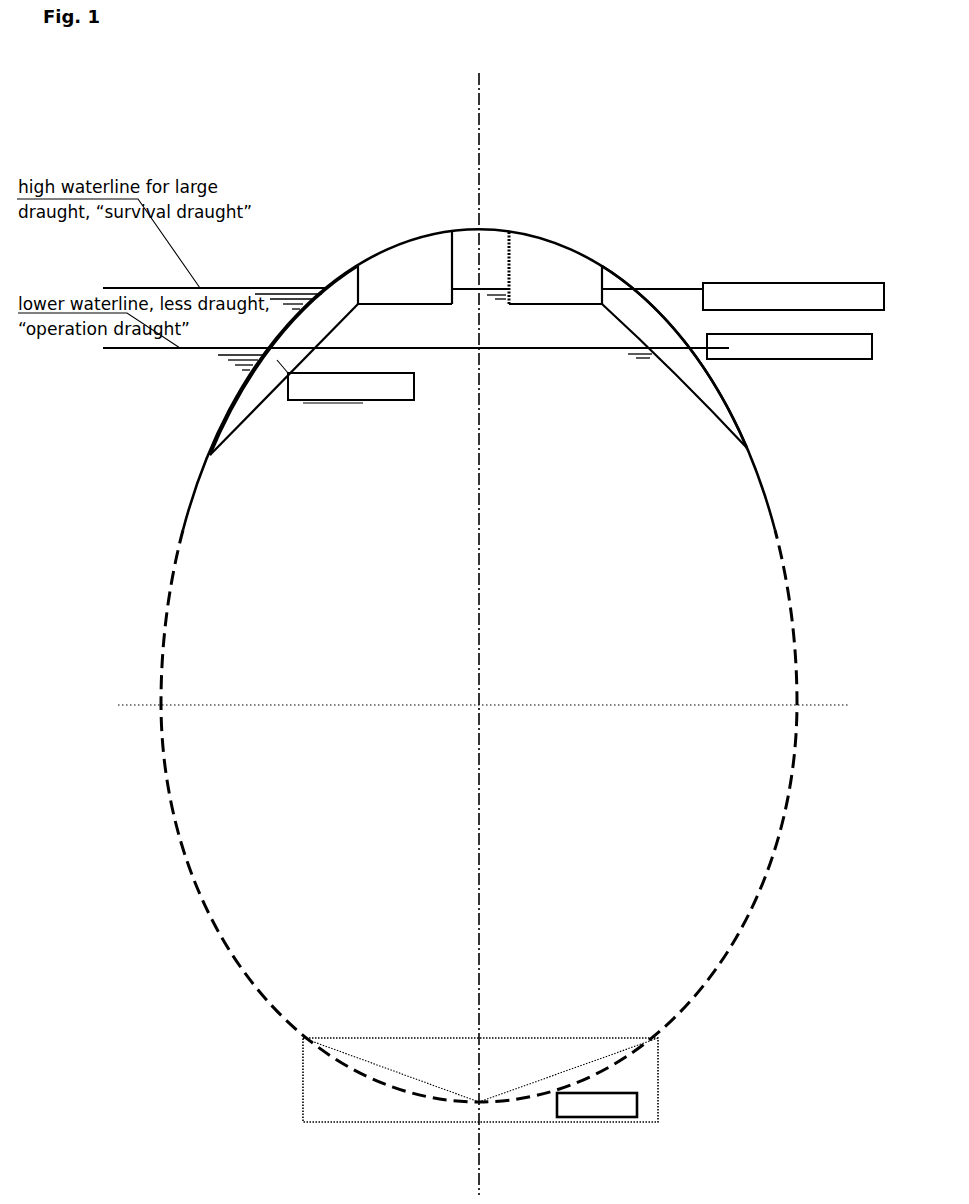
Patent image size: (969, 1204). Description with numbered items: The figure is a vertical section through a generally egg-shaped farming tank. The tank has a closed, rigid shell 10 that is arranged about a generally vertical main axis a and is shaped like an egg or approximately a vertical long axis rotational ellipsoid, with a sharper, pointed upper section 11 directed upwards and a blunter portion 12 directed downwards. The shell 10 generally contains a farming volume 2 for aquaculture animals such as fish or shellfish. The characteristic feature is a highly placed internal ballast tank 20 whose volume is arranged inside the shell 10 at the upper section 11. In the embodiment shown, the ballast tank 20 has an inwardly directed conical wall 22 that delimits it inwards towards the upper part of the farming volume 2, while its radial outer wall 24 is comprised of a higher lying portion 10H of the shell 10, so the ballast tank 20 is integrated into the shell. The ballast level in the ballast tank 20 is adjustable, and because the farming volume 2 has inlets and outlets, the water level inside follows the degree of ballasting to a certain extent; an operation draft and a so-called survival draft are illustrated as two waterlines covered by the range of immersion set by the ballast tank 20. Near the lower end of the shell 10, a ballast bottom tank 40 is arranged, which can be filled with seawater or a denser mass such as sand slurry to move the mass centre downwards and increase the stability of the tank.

The main axis a is at (669, 605).
The shell 10 is at (531, 619).
The higher lying portion of the shell 10H is at (799, 260).
The upper section 11 is at (450, 306).
The blunter portion 12 is at (548, 843).
The farming volume 2 is at (524, 660).
The ballast tank 20 is at (561, 308).
The conical wall 22 is at (284, 379).
The outer wall 24 is at (561, 308).
The ballast bottom tank 40 is at (602, 1111).